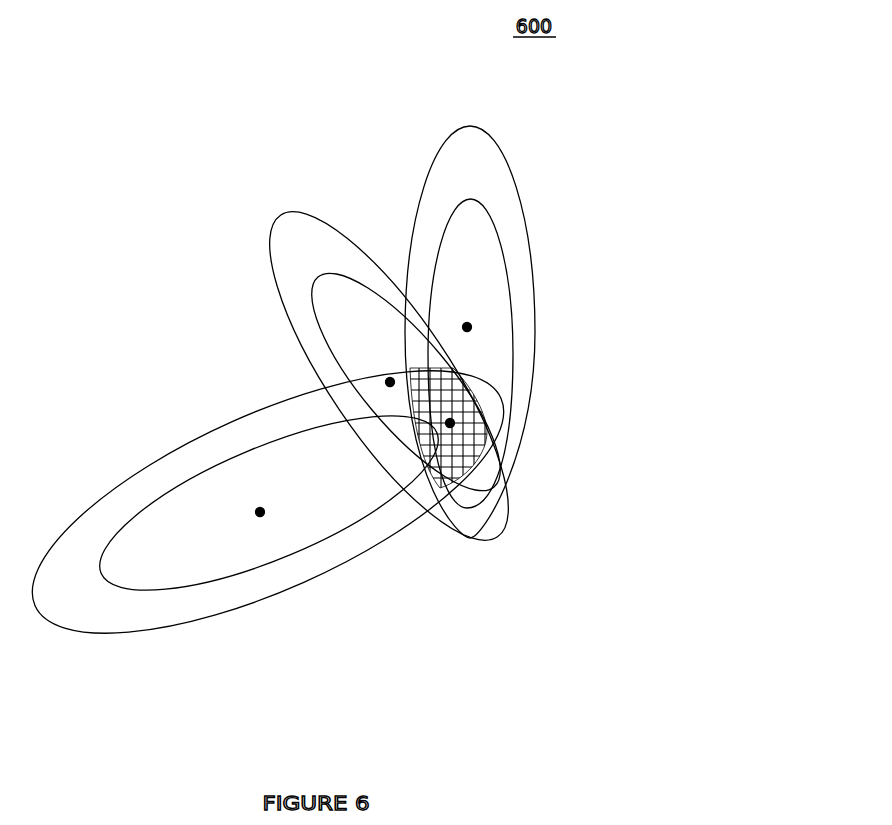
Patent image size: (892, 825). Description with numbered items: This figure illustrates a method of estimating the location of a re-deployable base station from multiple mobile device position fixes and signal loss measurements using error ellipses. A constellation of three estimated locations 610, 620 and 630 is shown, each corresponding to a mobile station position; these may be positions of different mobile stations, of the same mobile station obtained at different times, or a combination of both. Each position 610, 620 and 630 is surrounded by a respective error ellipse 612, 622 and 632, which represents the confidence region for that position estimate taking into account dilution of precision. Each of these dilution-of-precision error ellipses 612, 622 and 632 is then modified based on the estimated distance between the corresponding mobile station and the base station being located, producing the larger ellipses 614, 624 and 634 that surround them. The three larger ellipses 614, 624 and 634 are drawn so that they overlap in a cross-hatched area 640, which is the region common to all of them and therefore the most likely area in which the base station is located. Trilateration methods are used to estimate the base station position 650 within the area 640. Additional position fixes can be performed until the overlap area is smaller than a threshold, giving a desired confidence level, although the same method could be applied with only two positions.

The estimated location 610 is at (467, 327).
The error ellipse 612 is at (513, 312).
The larger ellipse 614 is at (530, 246).
The estimated location 620 is at (260, 512).
The error ellipse 622 is at (335, 537).
The larger ellipse 624 is at (228, 610).
The estimated location 630 is at (390, 382).
The error ellipse 632 is at (368, 283).
The larger ellipse 634 is at (282, 320).
The overlap area 640 is at (500, 485).
The FBS position 650 is at (450, 423).